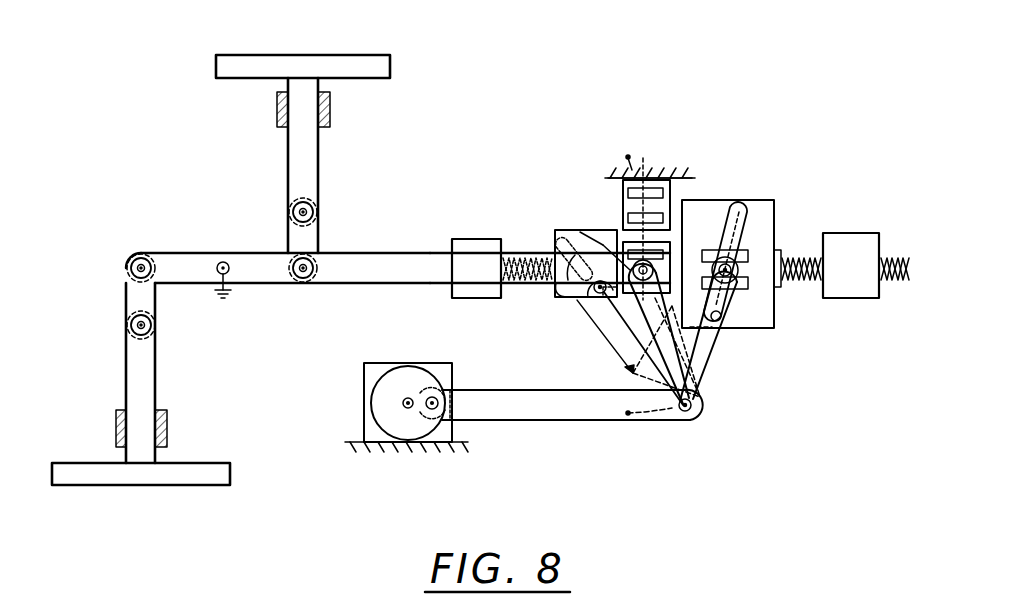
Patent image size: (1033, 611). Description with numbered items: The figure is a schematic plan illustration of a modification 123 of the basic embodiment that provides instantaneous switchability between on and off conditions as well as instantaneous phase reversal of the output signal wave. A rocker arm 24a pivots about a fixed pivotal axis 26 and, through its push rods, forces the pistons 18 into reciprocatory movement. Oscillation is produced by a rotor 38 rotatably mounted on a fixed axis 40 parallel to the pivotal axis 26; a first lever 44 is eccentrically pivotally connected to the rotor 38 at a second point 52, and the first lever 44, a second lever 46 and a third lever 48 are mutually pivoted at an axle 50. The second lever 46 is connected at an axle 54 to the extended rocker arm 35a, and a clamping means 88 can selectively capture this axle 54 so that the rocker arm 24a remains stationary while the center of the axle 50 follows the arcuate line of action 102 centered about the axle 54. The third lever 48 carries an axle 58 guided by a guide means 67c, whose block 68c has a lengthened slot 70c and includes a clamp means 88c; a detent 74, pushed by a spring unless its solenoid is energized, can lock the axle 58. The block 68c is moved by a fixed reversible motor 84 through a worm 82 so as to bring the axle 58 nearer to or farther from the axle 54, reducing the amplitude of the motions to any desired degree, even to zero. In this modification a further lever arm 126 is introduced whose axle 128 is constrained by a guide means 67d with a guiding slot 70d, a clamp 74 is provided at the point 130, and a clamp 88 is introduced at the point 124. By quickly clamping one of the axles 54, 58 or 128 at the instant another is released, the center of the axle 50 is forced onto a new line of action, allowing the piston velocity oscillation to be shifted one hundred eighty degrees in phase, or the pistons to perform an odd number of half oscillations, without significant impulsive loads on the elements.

The pistons 18 is at (371, 55).
The rocker arm 24a is at (374, 250).
The pivotal axis 26 is at (223, 262).
The rocker arm 35a is at (431, 232).
The fixed reversible motor 84 is at (497, 239).
The worm 82 is at (536, 236).
The point 130 is at (553, 262).
The guide means 67d is at (585, 230).
The detent 74 is at (603, 245).
The axle 128 is at (599, 300).
The guiding slot 70d is at (556, 289).
The clamping means 88 is at (623, 242).
The point 124 is at (637, 210).
The modification 123 is at (628, 113).
The guide means 67c is at (734, 208).
The clamp means 88c is at (702, 254).
The axle 58 is at (735, 262).
The block 68c is at (775, 305).
The slot 70c is at (722, 326).
The third lever 48 is at (717, 340).
The second lever 46 is at (670, 329).
The axle 54 is at (620, 338).
The lever arm 126 is at (628, 355).
The axle 50 is at (696, 410).
The arcuate line of action 102 is at (630, 420).
The first lever 44 is at (567, 415).
The rotor 38 is at (386, 408).
The fixed axis 40 is at (403, 400).
The second point 52 is at (440, 404).